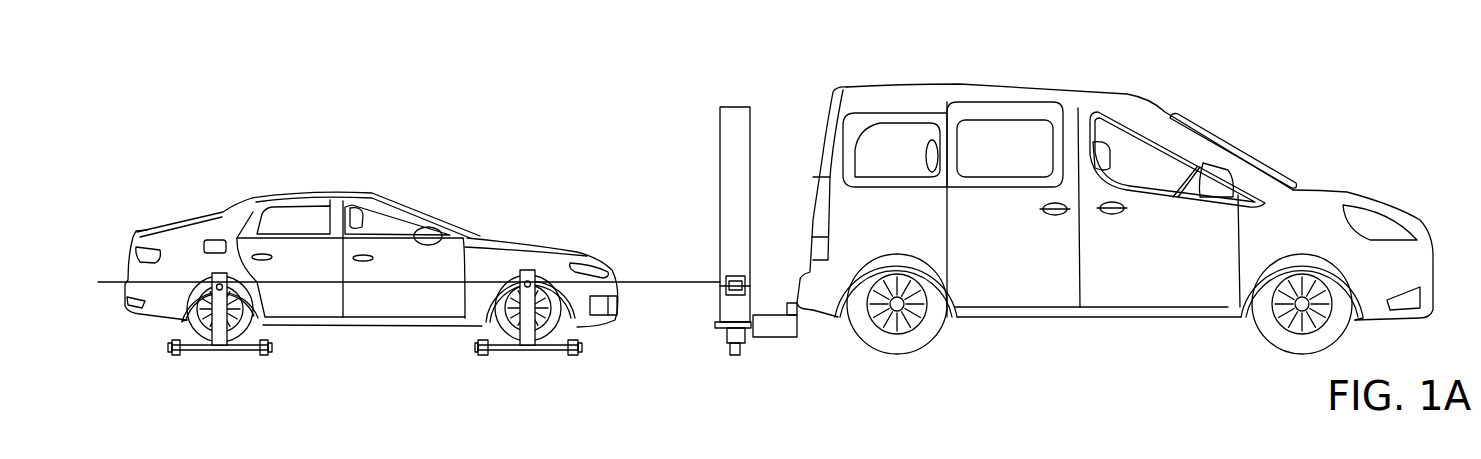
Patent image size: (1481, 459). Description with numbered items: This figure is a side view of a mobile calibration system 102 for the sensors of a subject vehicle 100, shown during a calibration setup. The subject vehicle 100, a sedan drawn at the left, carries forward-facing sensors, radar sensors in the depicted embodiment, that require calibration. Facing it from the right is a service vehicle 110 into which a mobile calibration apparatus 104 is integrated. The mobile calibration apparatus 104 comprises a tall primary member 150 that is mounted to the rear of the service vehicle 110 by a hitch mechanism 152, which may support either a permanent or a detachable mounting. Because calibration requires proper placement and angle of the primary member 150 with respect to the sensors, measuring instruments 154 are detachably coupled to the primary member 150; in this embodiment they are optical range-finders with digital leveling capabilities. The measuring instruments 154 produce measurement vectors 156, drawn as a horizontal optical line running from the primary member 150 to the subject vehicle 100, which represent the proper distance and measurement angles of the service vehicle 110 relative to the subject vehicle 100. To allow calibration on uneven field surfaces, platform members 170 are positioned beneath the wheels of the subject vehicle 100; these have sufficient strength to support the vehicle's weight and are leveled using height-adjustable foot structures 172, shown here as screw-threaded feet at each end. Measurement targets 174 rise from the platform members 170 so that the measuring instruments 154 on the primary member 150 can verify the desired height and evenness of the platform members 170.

The subject vehicle 100 is at (325, 190).
The mobile calibration system 102 is at (333, 86).
The mobile calibration apparatus 104 is at (660, 122).
The service vehicle 110 is at (957, 85).
The primary member 150 is at (734, 115).
The hitch mechanism 152 is at (777, 340).
The measuring instruments 154 is at (748, 282).
The measurement vectors 156 is at (653, 280).
The platform members 170 is at (221, 351).
The height-adjustable foot structures 172 is at (177, 357).
The measurement targets 174 is at (219, 272).